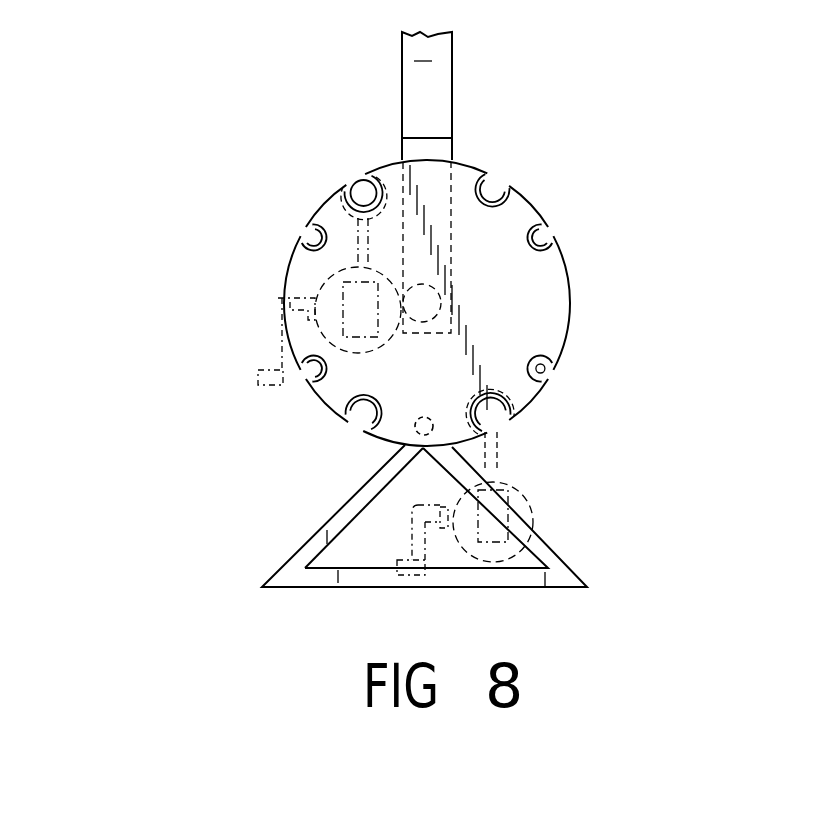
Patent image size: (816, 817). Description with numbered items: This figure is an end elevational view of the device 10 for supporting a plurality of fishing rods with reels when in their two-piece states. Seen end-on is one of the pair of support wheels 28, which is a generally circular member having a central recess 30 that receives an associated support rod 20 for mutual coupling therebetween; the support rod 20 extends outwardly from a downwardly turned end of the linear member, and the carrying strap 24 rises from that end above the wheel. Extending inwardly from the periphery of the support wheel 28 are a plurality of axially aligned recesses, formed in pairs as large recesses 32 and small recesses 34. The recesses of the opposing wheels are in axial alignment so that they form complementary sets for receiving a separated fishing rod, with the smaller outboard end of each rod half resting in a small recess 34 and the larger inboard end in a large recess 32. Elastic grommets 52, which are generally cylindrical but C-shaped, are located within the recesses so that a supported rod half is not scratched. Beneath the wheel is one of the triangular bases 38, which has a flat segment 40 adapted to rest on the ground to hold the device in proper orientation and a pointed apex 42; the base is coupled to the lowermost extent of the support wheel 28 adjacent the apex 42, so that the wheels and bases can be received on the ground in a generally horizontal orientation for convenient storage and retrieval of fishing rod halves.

The device for supporting a plurality of fishing rods with reels 10 is at (170, 255).
The support rod 20 is at (415, 428).
The carrying strap 24 is at (445, 75).
The support wheel 28 is at (560, 297).
The central recess 30 is at (490, 470).
The large recess 32 is at (360, 185).
The small recess 34 is at (310, 232).
The triangular base 38 is at (305, 541).
The flat segment 40 is at (375, 588).
The pointed apex 42 is at (382, 457).
The elastic grommet 52 is at (512, 398).